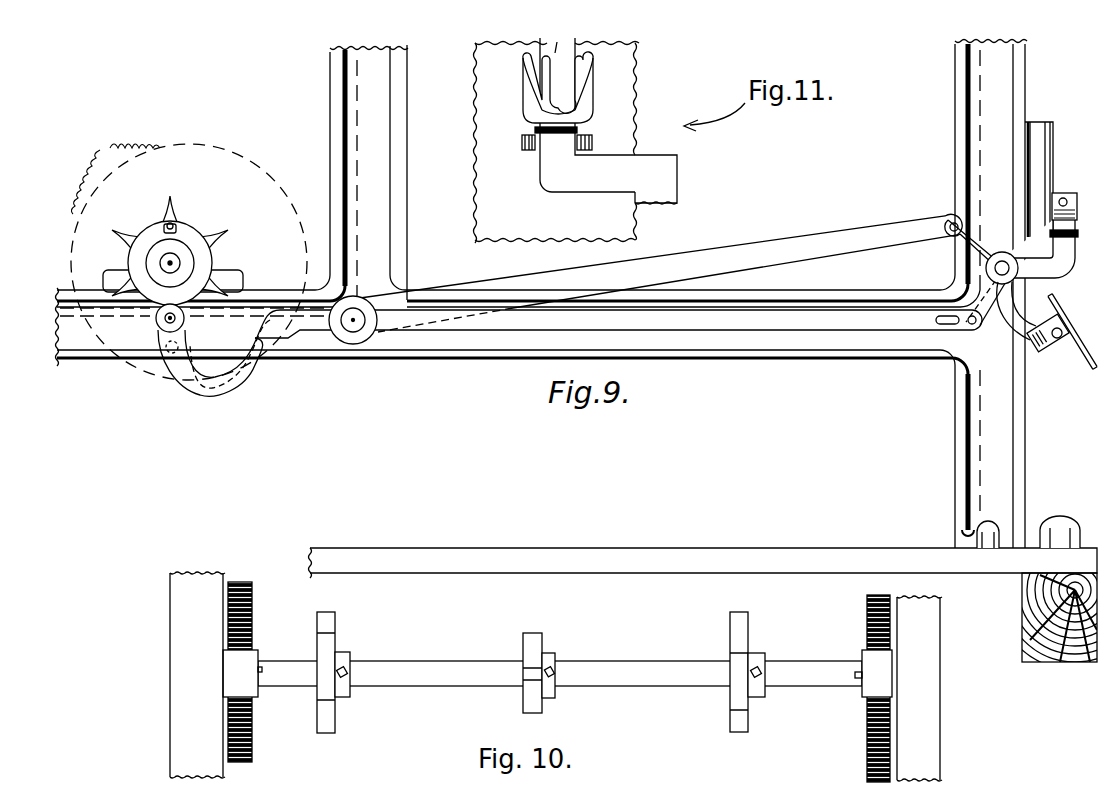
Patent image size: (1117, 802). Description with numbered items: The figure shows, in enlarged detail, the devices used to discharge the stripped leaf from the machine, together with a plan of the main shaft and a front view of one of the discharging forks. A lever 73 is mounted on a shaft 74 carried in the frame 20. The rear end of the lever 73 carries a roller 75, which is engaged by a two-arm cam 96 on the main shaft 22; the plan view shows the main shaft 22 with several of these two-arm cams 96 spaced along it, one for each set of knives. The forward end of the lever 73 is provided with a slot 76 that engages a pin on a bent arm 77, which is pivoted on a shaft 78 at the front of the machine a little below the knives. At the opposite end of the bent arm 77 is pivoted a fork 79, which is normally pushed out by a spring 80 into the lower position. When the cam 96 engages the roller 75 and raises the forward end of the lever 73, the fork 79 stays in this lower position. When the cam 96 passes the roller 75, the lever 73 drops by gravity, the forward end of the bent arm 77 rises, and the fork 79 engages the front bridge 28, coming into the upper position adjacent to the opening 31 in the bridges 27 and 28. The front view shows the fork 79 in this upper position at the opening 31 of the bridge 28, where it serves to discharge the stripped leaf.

In FIG. 9, the frame 20 is at (369, 172).
In FIG. 10, the frame 20 is at (556, 676).
In FIG. 9, the main shaft 22 is at (175, 263).
In FIG. 10, the main shaft 22 is at (435, 648).
In FIG. 9, the bridge 27 is at (1025, 143).
In FIG. 9, the second bridge 28 is at (1056, 112).
In FIG. 11, the second bridge 28 is at (557, 140).
In FIG. 11, the openings 31 is at (550, 37).
In FIG. 9, the lever 73 is at (570, 305).
In FIG. 9, the shaft 74 is at (356, 330).
In FIG. 9, the roller 75 is at (156, 320).
In FIG. 9, the slot 76 is at (946, 222).
In FIG. 9, the bent arm 77 is at (1032, 252).
In FIG. 11, the bent arm 77 is at (677, 178).
In FIG. 9, the shaft 78 is at (1014, 283).
In FIG. 9, the fork 79 is at (1053, 163).
In FIG. 11, the fork 79 is at (530, 93).
In FIG. 9, the spring 80 is at (1057, 305).
In FIG. 9, the two-arm cam 96 is at (193, 228).
In FIG. 10, the two-arm cam 96 is at (335, 620).